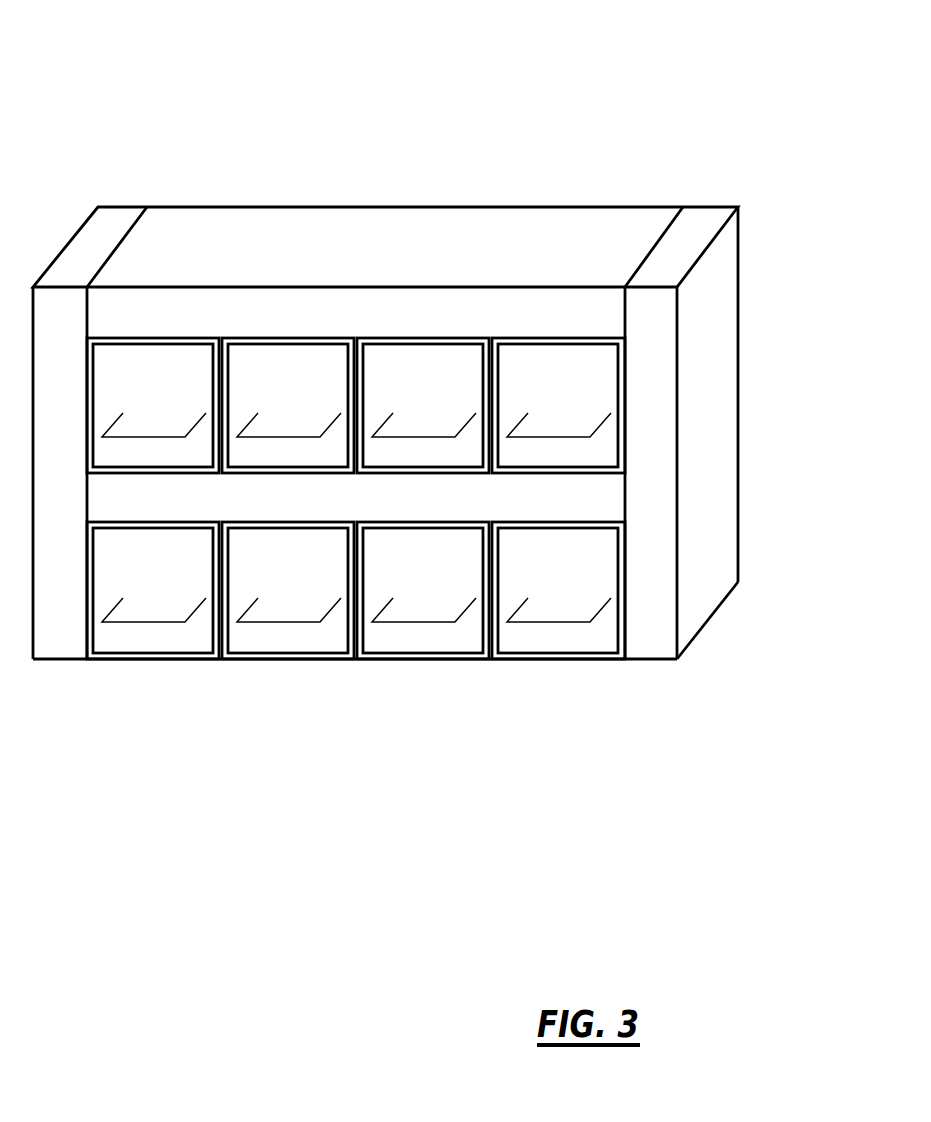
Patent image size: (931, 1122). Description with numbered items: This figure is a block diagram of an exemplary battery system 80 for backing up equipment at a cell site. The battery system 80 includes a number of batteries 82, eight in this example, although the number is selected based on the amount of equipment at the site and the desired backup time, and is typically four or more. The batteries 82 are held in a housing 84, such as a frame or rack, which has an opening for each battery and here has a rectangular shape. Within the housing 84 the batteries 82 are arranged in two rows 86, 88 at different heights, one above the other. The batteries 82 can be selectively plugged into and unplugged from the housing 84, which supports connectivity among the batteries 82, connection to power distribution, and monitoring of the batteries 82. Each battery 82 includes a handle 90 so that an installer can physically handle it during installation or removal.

The battery system 80 is at (412, 376).
The batteries 82 is at (132, 636).
The housing 84 is at (623, 207).
The row 86 is at (650, 561).
The row 88 is at (650, 372).
The handle 90 is at (290, 622).